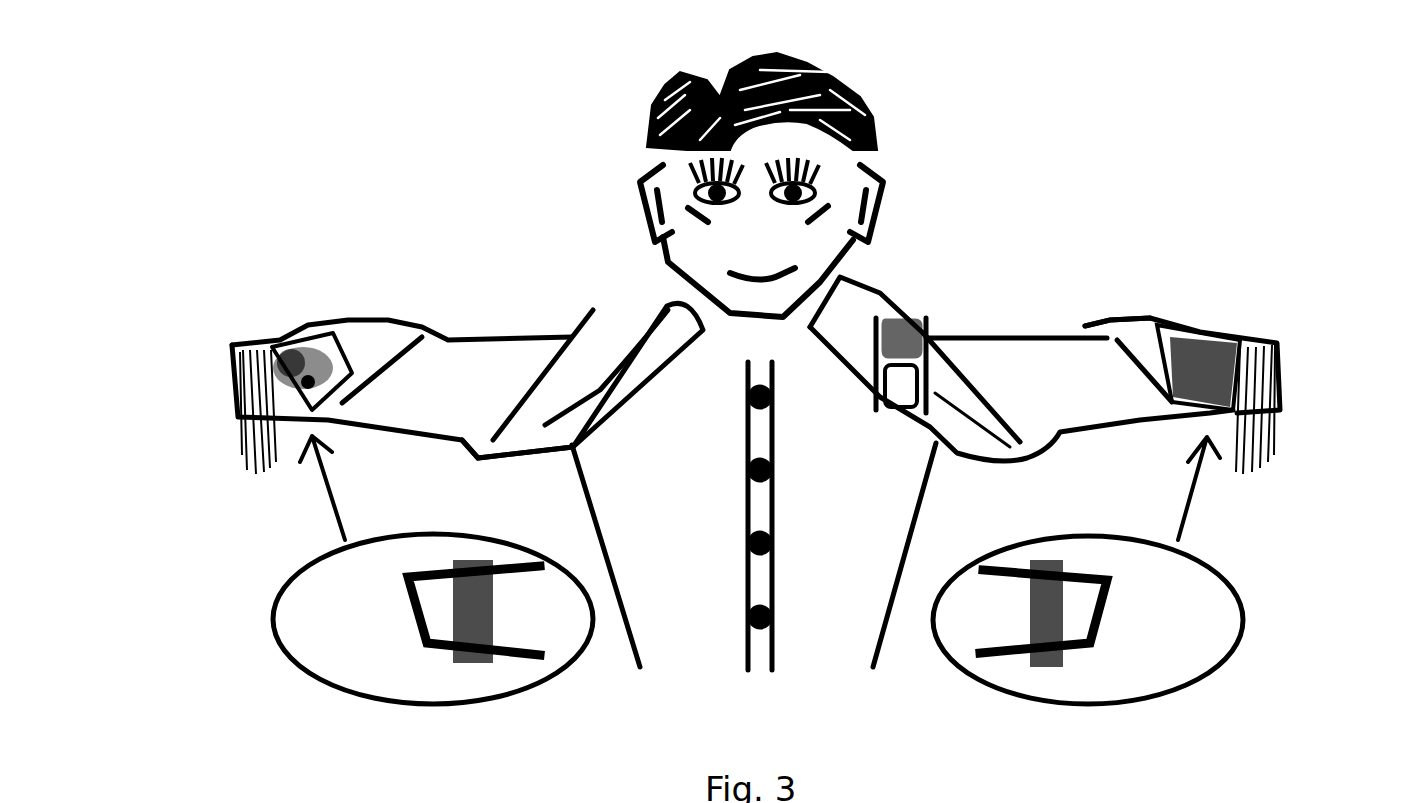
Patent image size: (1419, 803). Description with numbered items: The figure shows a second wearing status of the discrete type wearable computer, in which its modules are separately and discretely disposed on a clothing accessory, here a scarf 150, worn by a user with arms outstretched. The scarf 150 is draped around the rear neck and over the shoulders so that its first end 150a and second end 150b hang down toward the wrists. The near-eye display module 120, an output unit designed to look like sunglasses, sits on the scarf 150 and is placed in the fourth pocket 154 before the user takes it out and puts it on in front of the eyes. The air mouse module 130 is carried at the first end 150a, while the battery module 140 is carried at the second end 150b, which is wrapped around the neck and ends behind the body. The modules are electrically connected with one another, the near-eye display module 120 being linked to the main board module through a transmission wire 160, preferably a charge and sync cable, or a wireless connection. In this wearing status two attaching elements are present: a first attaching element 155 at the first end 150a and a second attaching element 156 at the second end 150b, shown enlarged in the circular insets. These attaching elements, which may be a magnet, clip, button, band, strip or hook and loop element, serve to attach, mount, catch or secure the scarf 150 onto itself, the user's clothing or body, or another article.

The near-eye display module 120 is at (917, 327).
The air mouse module 130 is at (312, 353).
The battery module 140 is at (1200, 342).
The scarf 150 is at (597, 307).
The first end 150a is at (208, 460).
The second end 150b is at (1300, 461).
The fourth pocket 154 is at (928, 370).
The first attaching element 155 is at (478, 663).
The second attaching element 156 is at (1038, 662).
The transmission wire 160 is at (520, 440).